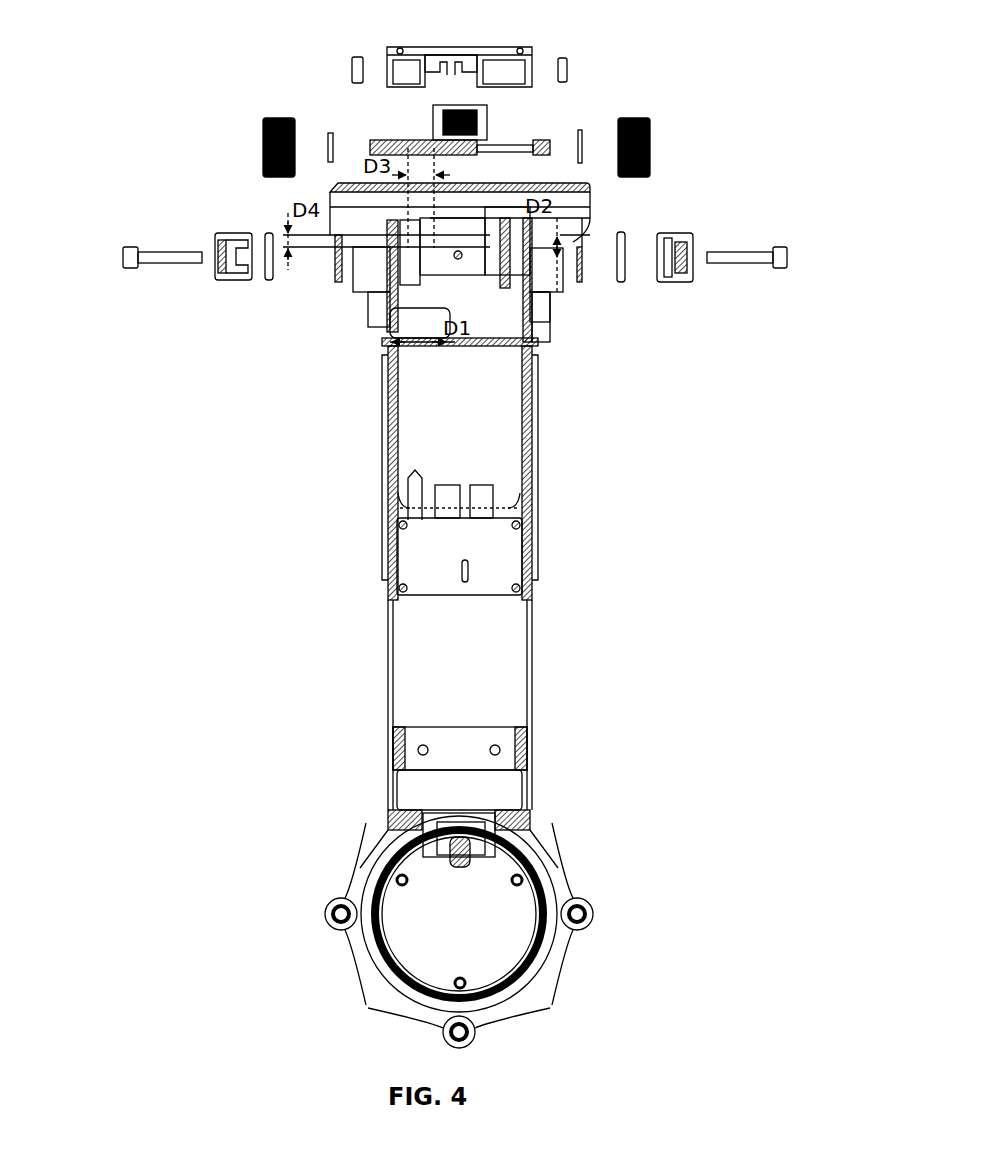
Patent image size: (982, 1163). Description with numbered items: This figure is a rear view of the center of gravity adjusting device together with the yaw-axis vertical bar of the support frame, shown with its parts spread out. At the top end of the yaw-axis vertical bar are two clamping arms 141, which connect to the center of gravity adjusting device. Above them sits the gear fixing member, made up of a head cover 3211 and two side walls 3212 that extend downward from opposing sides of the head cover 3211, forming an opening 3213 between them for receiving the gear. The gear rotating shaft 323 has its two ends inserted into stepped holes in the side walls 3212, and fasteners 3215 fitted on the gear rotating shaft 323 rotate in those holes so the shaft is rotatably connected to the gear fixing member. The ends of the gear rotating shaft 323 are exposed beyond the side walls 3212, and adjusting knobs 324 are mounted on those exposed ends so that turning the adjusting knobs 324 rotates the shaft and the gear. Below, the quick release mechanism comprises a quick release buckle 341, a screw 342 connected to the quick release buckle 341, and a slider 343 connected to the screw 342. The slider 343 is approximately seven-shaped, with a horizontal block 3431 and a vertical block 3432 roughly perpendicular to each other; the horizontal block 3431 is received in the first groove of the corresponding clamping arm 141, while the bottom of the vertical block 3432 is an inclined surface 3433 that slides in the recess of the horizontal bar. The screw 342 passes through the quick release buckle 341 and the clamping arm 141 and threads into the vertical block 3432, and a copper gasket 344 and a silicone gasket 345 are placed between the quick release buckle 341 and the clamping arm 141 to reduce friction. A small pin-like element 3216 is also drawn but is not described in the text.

The head cover 3211 is at (490, 47).
The side walls 3212 is at (518, 80).
The opening 3213 is at (463, 79).
The pin 3216 is at (567, 64).
The gear rotating shaft 323 is at (387, 142).
The adjusting knobs 324 is at (263, 137).
The fasteners 3215 is at (655, 128).
The silicone gasket 345 is at (587, 238).
The copper gasket 344 is at (627, 232).
The screw 342 is at (158, 258).
The quick release buckle 341 is at (228, 280).
The clamping arms 141 is at (555, 292).
The inclined surface 3433 is at (542, 303).
The horizontal block 3431 is at (517, 272).
The vertical block 3432 is at (436, 243).
The slider 343 is at (661, 360).